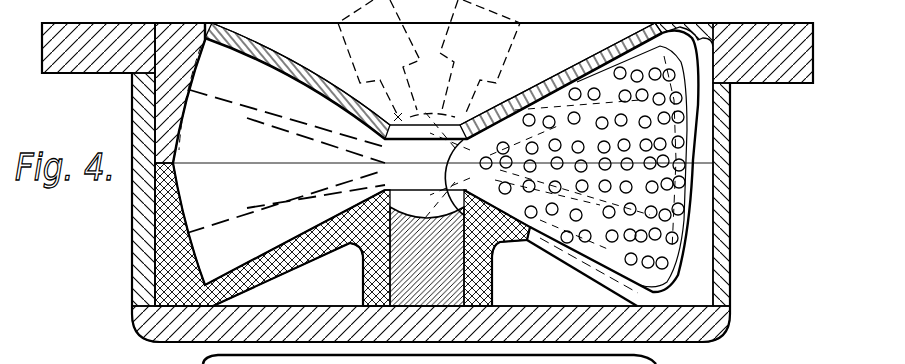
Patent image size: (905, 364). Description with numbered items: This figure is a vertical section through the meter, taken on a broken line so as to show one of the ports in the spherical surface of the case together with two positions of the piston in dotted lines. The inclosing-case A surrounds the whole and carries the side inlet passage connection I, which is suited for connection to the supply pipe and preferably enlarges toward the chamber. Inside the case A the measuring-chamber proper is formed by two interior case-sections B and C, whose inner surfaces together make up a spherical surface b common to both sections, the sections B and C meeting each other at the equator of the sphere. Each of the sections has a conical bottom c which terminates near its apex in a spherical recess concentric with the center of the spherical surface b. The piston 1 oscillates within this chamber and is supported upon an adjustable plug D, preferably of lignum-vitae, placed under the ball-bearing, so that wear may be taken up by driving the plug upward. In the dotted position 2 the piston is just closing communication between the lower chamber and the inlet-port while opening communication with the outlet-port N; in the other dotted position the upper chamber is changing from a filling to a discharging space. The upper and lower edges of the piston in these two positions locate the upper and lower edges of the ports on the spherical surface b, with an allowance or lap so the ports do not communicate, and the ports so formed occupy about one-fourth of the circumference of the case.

The inclosing-case A is at (427, 182).
The interior case-section B is at (180, 93).
The interior case-section C is at (342, 234).
The adjustable plug D is at (427, 256).
The inlet passage connection I is at (427, 93).
The outlet-port N is at (561, 161).
The conical wall 1 is at (433, 81).
The piston position 2 is at (336, 127).
The spherical surface b is at (432, 163).
The conical bottom c is at (480, 166).
The lower screen band i is at (582, 272).